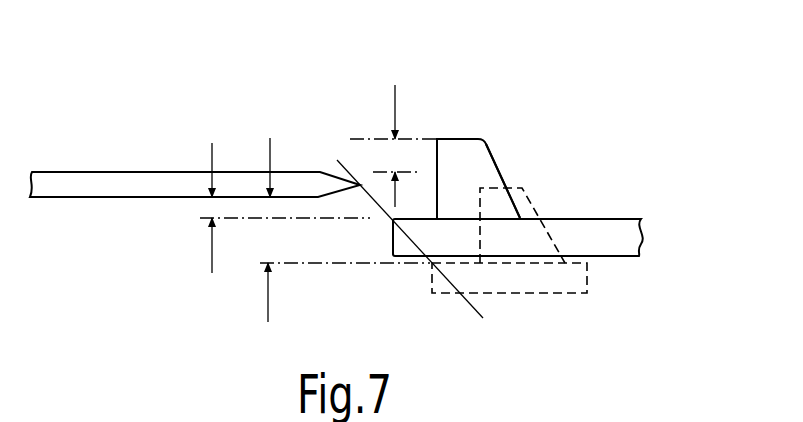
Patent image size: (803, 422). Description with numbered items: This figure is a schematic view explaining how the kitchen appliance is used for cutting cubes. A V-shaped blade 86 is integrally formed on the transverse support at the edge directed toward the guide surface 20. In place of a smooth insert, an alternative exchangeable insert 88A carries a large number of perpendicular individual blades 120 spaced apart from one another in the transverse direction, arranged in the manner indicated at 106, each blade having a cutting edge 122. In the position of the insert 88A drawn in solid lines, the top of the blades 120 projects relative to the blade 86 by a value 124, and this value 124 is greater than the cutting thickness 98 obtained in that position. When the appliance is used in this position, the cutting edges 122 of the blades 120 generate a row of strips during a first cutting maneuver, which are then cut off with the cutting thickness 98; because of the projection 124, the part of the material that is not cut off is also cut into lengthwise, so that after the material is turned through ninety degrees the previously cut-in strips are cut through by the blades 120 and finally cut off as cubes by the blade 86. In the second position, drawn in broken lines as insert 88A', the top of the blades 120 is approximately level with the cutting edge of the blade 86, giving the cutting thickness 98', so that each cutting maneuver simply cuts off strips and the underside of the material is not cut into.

The blade 86 is at (116, 186).
The individual blades 120 is at (458, 163).
The arrangement of blades 106 is at (478, 179).
The cutting edges 122 is at (502, 174).
The guide surface 20 is at (620, 219).
The exchangeable insert 88A is at (541, 289).
The insert in second position 88A' is at (469, 276).
The projection value 124 is at (390, 153).
The cutting thickness 98 is at (243, 219).
The cutting thickness in second position 98' is at (345, 237).